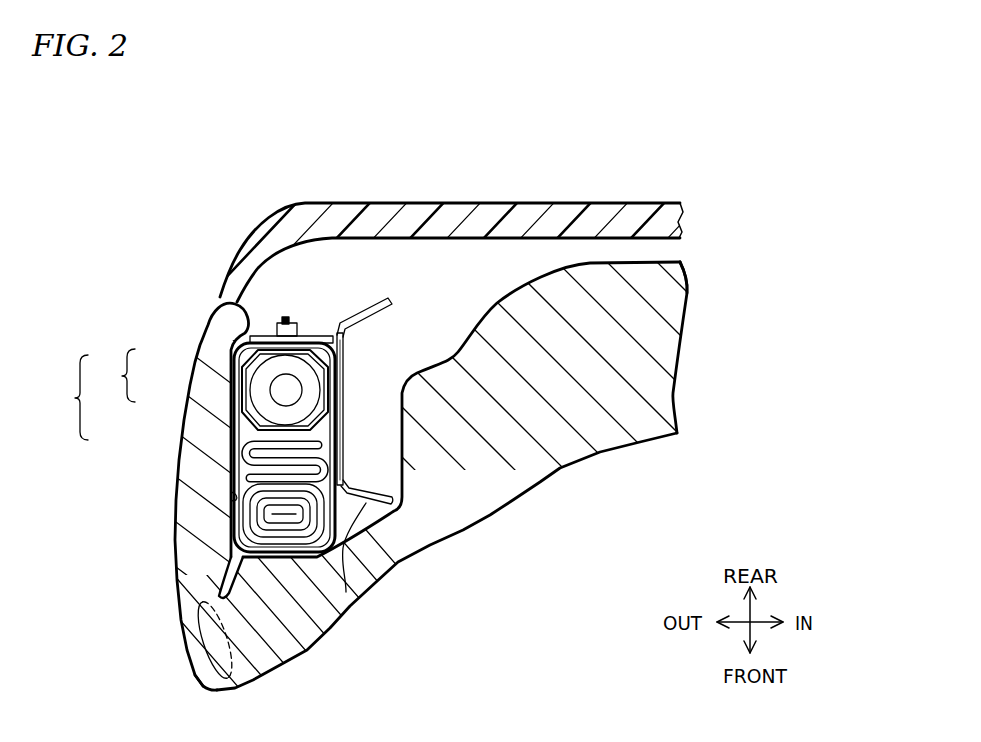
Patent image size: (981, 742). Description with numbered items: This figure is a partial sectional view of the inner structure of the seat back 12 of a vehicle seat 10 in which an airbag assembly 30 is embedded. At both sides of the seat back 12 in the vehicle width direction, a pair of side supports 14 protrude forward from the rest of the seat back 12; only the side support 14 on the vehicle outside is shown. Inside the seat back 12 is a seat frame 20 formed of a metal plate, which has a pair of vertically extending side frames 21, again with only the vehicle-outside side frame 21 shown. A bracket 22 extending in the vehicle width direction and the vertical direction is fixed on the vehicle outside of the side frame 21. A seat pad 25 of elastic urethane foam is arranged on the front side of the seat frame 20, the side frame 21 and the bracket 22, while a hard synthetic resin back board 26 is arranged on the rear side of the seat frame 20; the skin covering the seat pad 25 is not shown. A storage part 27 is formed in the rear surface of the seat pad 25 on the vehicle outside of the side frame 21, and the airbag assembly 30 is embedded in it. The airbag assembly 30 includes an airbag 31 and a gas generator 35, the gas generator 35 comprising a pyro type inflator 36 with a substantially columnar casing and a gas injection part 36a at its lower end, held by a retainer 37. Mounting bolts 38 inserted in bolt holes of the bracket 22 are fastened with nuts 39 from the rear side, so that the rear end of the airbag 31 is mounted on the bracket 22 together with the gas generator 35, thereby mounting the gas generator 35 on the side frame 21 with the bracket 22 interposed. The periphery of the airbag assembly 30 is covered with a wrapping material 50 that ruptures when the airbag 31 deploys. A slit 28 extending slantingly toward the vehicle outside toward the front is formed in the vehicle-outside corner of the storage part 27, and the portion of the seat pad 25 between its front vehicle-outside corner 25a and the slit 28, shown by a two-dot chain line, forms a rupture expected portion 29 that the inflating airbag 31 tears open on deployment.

The vehicle seat 10 is at (683, 277).
The seat back 12 is at (681, 463).
The side support 14 is at (311, 655).
The seat frame 20 is at (340, 409).
The side frame 21 is at (397, 557).
The bracket 22 is at (330, 334).
The seat pad 25 is at (613, 437).
The vehicle-outside corner 25a is at (200, 690).
The back board 26 is at (494, 200).
The storage part 27 is at (243, 497).
The slit 28 is at (233, 570).
The rupture expected portion 29 is at (200, 615).
The airbag assembly 30 is at (191, 447).
The airbag 31 is at (230, 467).
The gas generator 35 is at (210, 389).
The inflator 36 is at (258, 376).
The gas injection part 36a is at (293, 383).
The retainer 37 is at (230, 357).
The mounting bolt 38 is at (286, 317).
The nut 39 is at (276, 330).
The wrapping material 50 is at (346, 592).